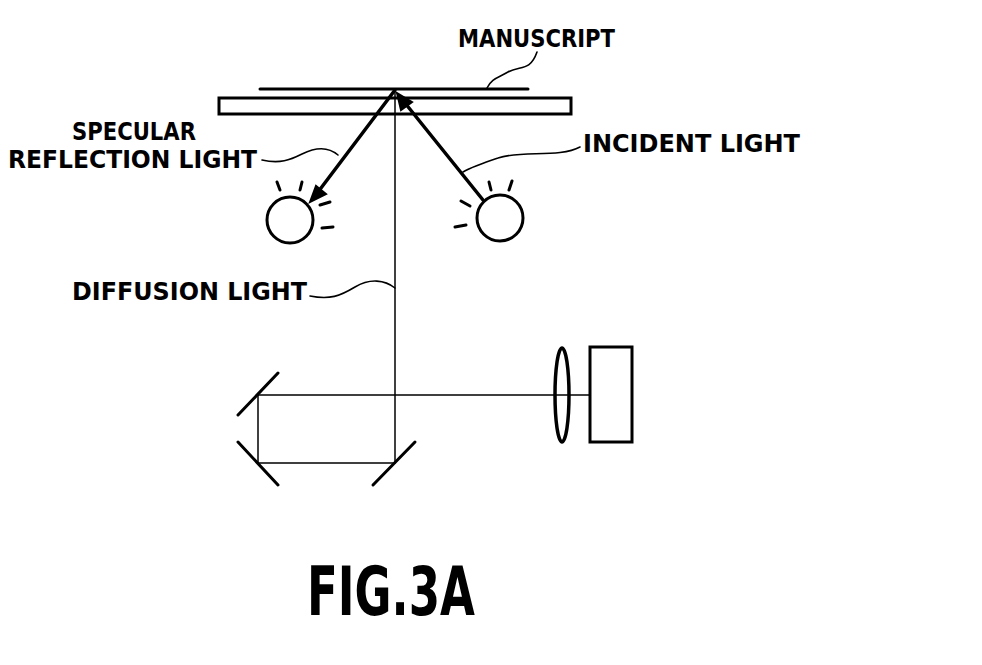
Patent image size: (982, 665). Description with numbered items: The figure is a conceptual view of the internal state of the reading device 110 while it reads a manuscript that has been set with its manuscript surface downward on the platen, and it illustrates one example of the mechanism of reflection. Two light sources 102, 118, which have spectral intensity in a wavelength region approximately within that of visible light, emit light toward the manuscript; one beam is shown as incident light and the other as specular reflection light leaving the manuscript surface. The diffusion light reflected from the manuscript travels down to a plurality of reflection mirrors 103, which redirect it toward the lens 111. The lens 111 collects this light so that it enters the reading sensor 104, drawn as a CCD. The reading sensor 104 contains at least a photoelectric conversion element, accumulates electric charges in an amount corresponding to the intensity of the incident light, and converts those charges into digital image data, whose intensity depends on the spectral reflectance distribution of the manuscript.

The reading device 110 is at (728, 73).
The light source 118 is at (267, 218).
The light source 102 is at (523, 218).
The reflection mirror 103 is at (266, 380).
The lens 111 is at (563, 442).
The reading sensor 104 is at (633, 368).